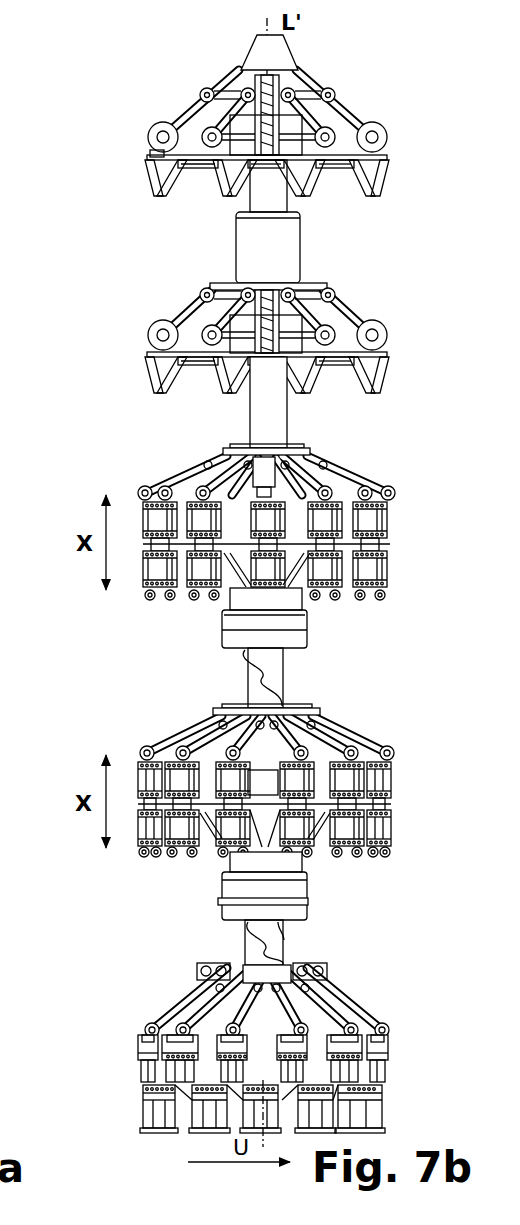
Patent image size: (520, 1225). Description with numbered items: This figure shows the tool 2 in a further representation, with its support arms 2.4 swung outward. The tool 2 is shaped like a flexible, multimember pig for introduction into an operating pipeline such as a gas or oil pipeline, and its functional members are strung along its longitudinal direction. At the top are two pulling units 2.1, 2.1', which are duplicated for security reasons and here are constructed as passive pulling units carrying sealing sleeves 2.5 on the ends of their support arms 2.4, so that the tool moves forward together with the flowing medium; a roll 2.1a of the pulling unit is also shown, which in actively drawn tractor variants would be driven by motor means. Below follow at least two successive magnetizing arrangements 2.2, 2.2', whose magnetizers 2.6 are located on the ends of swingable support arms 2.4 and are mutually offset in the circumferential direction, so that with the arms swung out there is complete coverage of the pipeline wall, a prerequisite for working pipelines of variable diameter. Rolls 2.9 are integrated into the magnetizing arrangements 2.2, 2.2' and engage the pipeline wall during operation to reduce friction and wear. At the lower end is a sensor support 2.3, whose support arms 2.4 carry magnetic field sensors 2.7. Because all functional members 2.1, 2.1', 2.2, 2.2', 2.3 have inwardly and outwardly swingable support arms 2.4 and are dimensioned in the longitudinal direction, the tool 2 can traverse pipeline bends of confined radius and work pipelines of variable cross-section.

The tool 2 is at (128, 126).
The pulling unit 2.1 is at (197, 138).
The roll 2.1a is at (158, 152).
The pulling unit 2.1' is at (194, 330).
The magnetizing arrangement 2.2 is at (317, 563).
The magnetizing arrangement 2.2' is at (256, 809).
The sensor support 2.3 is at (375, 1000).
The support arm 2.4 is at (175, 325).
The sealing sleeve 2.5 is at (388, 178).
The magnetizer 2.6 is at (143, 566).
The sensor 2.7 is at (143, 1068).
The roll 2.9 is at (143, 864).